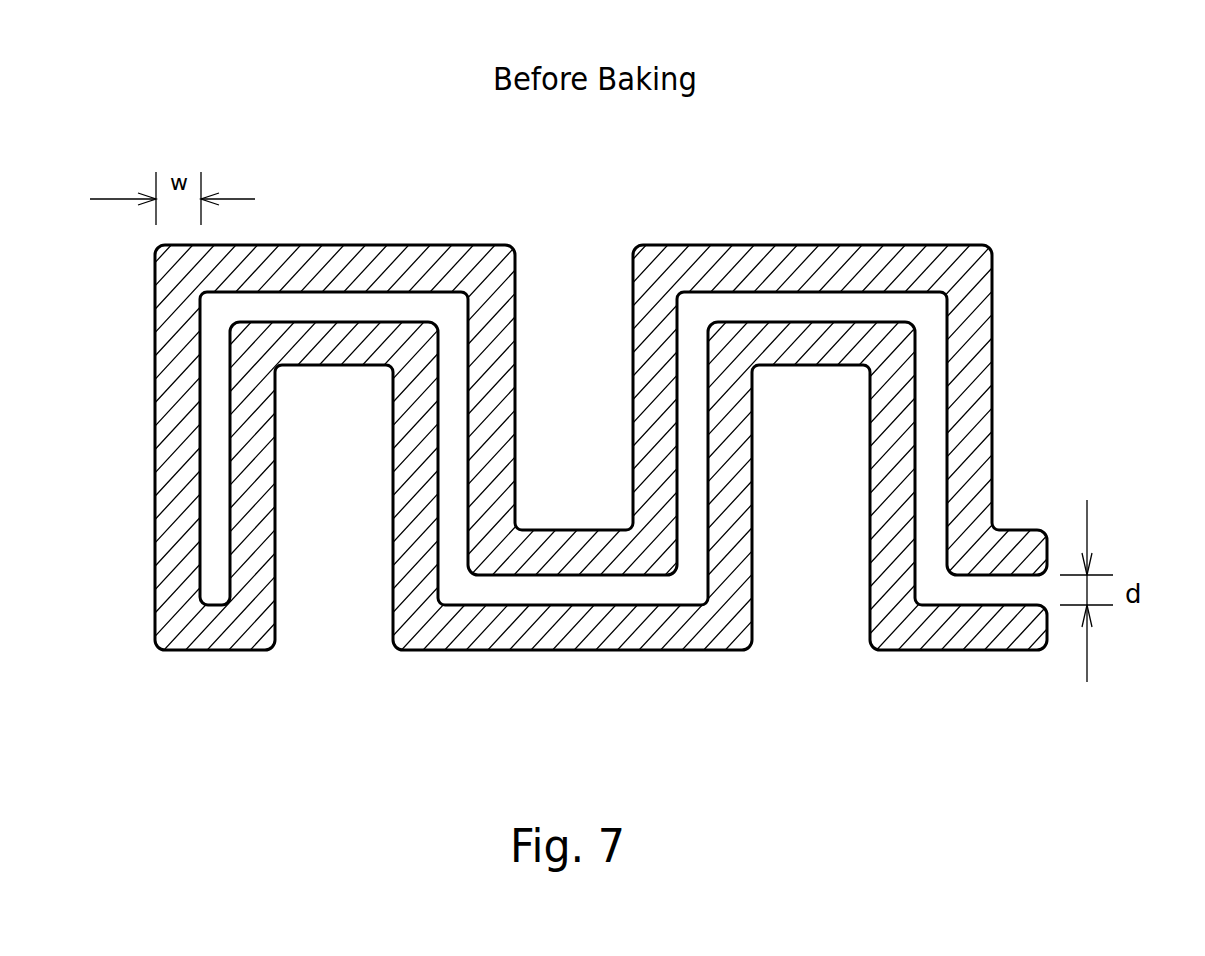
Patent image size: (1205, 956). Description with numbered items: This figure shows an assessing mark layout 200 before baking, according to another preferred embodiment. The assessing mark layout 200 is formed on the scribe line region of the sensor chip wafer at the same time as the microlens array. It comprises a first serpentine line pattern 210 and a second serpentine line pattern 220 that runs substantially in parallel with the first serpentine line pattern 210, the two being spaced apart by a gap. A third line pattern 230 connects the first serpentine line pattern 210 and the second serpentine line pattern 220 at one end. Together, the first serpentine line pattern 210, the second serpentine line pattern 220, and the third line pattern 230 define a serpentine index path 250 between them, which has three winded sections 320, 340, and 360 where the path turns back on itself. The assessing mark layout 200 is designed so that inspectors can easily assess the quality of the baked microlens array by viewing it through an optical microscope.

The assessing mark layout 200 is at (1008, 108).
The first serpentine line pattern 210 is at (332, 260).
The second serpentine line pattern 220 is at (578, 630).
The third line pattern 230 is at (215, 630).
The serpentine index path 250 is at (678, 590).
The winded section 320 is at (405, 232).
The winded section 340 is at (435, 660).
The winded section 360 is at (912, 230).